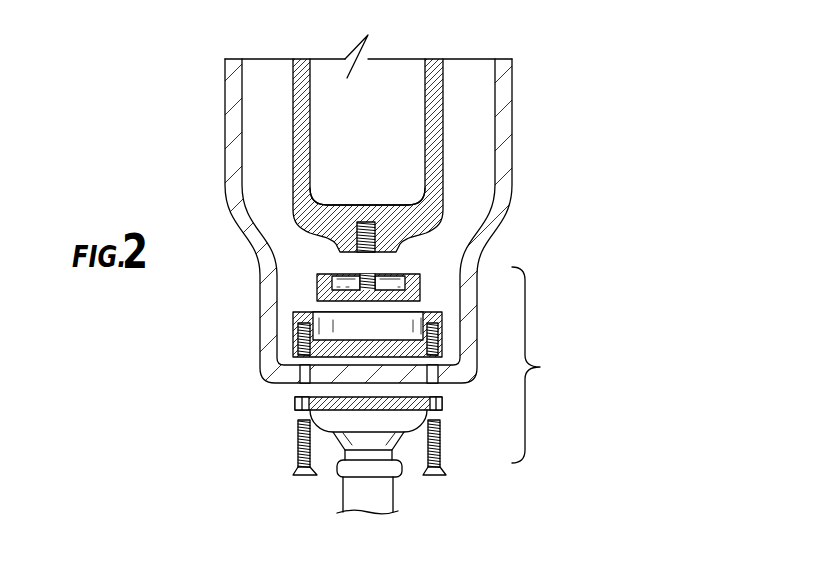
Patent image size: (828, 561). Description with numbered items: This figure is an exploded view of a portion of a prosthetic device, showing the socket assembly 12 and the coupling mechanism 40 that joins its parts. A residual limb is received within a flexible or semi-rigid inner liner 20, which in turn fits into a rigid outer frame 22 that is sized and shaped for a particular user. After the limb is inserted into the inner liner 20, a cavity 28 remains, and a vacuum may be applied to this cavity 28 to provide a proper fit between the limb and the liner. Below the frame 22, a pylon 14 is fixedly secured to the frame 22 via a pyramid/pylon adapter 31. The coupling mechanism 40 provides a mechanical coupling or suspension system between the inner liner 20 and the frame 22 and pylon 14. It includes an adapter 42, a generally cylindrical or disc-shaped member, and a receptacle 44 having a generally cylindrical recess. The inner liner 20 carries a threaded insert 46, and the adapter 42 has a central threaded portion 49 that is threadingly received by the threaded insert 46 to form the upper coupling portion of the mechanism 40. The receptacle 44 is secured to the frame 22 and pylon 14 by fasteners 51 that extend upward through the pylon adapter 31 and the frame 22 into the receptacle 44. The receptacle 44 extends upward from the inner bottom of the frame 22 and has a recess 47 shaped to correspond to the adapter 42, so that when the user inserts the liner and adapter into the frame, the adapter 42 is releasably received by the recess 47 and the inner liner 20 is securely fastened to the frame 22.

The socket assembly 12 is at (663, 110).
The pylon 14 is at (375, 490).
The inner liner 20 is at (436, 76).
The frame 22 is at (503, 106).
The cavity 28 is at (320, 203).
The pyramid/pylon adapter 31 is at (325, 422).
The coupling mechanism 40 is at (543, 365).
The adapter 42 is at (423, 280).
The receptacle 44 is at (443, 333).
The threaded insert 46 is at (367, 223).
The recess 47 is at (372, 324).
The central threaded portion 49 is at (360, 280).
The fasteners 51 is at (268, 472).